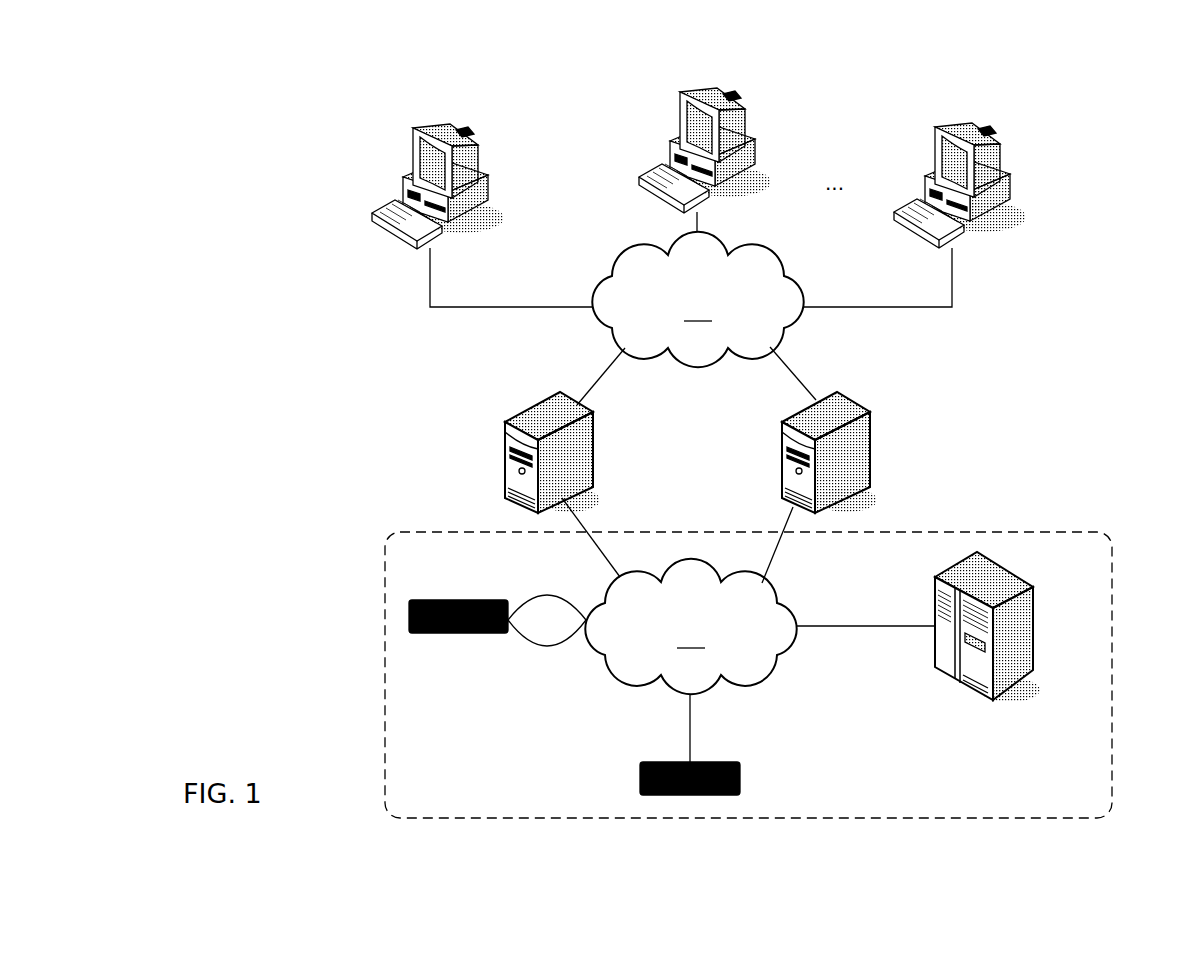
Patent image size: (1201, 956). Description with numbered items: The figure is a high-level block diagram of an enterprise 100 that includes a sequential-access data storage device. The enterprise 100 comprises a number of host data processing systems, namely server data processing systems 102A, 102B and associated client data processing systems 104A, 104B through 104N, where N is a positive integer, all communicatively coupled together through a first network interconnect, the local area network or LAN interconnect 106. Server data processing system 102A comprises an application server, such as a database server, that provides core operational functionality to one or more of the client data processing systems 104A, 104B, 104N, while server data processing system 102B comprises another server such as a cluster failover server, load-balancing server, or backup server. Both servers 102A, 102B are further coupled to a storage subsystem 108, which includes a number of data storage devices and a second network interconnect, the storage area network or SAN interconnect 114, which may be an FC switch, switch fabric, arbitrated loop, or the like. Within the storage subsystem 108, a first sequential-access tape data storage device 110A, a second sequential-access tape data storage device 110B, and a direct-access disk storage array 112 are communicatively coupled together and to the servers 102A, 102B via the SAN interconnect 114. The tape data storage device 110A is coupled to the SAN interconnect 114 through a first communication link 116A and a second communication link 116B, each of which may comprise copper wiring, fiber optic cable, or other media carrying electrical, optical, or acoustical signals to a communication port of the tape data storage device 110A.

The enterprise 100 is at (1086, 254).
The server data processing system 102A is at (506, 422).
The server data processing system 102B is at (863, 407).
The client data processing system 104A is at (430, 123).
The client data processing system 104B is at (682, 90).
The client data processing system 104N is at (957, 127).
The LAN interconnect 106 is at (697, 299).
The storage subsystem 108 is at (1103, 532).
The tape data storage device 110A is at (409, 612).
The tape data storage device 110B is at (740, 775).
The disk storage array 112 is at (977, 553).
The SAN interconnect 114 is at (690, 626).
The first communication link 116A is at (557, 597).
The second communication link 116B is at (560, 648).